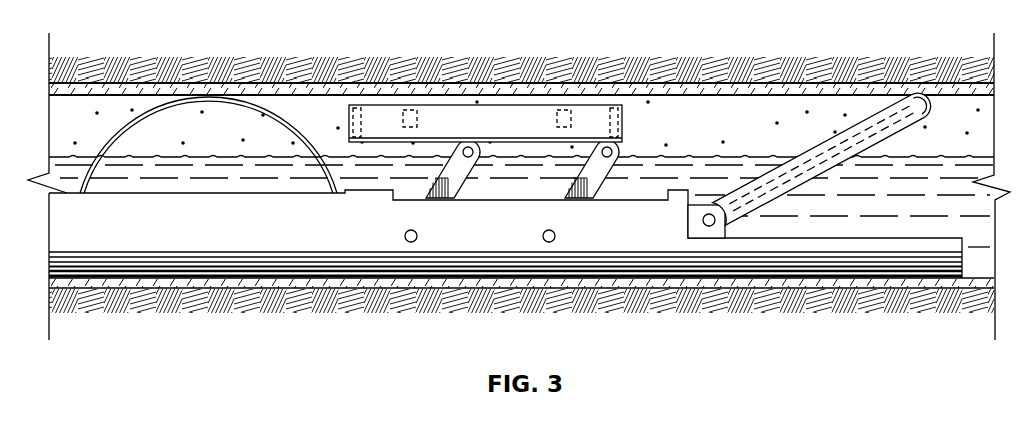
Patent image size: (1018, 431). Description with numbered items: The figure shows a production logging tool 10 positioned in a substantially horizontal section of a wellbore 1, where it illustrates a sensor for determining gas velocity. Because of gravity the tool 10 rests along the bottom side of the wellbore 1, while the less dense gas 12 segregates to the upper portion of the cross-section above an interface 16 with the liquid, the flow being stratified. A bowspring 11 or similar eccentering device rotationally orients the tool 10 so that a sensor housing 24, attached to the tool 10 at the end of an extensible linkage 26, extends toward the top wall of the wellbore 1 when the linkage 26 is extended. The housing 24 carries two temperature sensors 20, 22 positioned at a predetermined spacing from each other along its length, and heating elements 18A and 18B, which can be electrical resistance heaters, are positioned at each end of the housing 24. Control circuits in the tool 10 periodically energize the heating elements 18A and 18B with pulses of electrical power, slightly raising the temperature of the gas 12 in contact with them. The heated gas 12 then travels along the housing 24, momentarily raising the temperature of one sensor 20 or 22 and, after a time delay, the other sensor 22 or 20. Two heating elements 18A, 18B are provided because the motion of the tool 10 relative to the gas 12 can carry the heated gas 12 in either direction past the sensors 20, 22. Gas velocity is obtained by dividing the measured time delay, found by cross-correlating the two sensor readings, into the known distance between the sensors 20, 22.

The wellbore 1 is at (605, 283).
The production logging tool 10 is at (306, 238).
The bowspring 11 is at (153, 108).
The gas 12 is at (315, 115).
The interface 16 is at (727, 157).
The heating element 18A is at (357, 103).
The heating element 18B is at (614, 107).
The temperature sensor 20 is at (563, 108).
The temperature sensor 22 is at (410, 108).
The sensor housing 24 is at (490, 115).
The extensible linkage 26 is at (450, 183).